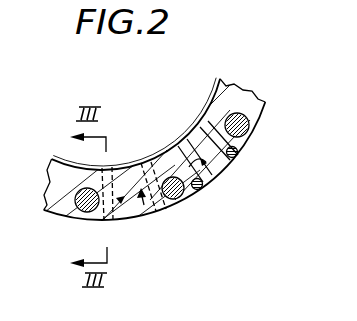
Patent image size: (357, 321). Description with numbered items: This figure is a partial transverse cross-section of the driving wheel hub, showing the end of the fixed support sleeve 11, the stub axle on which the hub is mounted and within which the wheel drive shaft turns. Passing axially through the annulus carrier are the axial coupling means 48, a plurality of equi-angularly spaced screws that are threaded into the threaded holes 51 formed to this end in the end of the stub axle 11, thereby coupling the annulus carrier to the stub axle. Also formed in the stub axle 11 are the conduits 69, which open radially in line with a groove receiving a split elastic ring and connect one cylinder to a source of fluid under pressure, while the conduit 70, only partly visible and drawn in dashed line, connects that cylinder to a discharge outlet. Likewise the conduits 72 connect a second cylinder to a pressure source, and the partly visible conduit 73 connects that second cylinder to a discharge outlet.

The fixed support sleeve 11 is at (255, 80).
The axial coupling means 48 is at (76, 197).
The threaded holes 51 is at (155, 165).
The conduits 69 is at (128, 222).
The conduit 70 is at (148, 215).
The conduits 72 is at (206, 179).
The conduit 73 is at (215, 152).